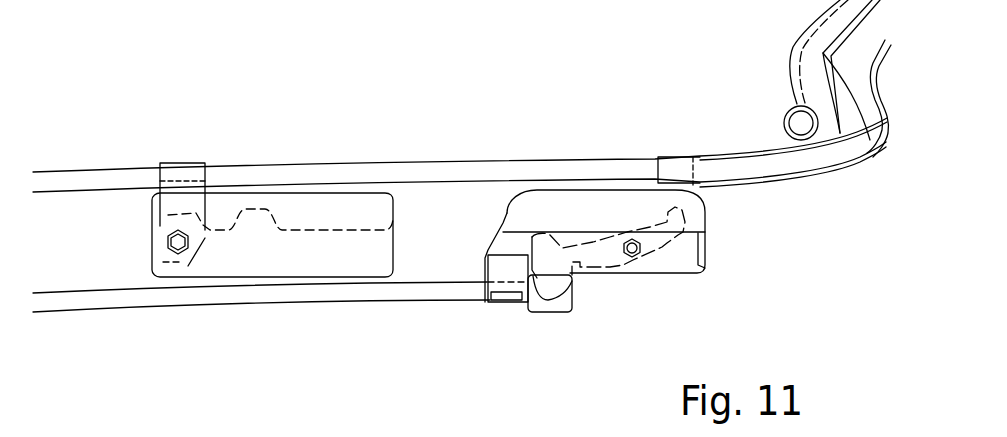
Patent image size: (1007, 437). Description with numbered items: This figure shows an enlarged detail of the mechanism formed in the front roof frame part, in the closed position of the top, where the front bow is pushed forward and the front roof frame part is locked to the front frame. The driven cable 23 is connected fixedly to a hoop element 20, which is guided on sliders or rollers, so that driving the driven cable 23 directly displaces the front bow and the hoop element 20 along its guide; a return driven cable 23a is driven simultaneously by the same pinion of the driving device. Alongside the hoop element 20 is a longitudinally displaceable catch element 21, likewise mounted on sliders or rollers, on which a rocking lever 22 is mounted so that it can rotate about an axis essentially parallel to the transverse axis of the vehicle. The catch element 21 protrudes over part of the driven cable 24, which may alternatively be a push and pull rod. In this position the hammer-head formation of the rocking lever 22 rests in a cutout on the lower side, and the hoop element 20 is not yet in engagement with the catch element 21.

The hoop element 20 is at (308, 195).
The catch element 21 is at (678, 260).
The rocking lever 22 is at (580, 260).
The driven cable 23 is at (465, 160).
The return driven cable 23a is at (796, 116).
The driven cable 24 is at (353, 293).